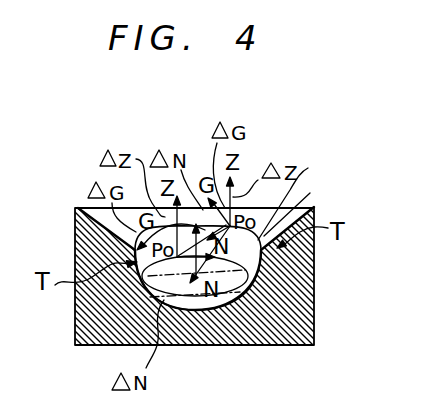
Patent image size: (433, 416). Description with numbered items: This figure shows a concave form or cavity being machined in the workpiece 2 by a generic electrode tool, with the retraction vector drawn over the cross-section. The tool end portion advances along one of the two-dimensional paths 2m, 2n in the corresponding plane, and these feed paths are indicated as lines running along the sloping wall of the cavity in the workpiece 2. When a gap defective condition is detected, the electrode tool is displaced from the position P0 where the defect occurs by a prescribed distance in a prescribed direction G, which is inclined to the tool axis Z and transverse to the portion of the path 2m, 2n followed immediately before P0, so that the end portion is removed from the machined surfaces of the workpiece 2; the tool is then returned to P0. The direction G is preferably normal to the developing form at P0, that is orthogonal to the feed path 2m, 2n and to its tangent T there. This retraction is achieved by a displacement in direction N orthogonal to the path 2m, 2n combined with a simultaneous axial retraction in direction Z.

The workpiece 2 is at (78, 328).
The two-dimensional path 2m is at (305, 194).
The two-dimensional path 2n is at (309, 206).